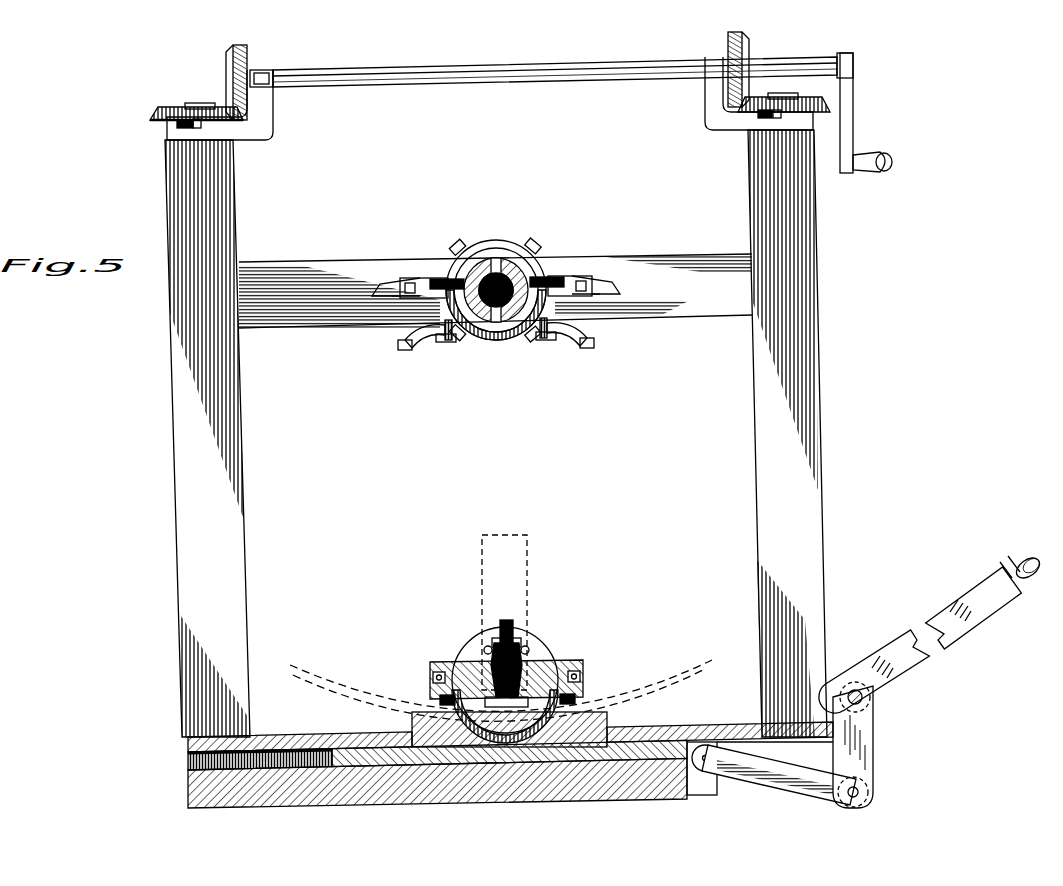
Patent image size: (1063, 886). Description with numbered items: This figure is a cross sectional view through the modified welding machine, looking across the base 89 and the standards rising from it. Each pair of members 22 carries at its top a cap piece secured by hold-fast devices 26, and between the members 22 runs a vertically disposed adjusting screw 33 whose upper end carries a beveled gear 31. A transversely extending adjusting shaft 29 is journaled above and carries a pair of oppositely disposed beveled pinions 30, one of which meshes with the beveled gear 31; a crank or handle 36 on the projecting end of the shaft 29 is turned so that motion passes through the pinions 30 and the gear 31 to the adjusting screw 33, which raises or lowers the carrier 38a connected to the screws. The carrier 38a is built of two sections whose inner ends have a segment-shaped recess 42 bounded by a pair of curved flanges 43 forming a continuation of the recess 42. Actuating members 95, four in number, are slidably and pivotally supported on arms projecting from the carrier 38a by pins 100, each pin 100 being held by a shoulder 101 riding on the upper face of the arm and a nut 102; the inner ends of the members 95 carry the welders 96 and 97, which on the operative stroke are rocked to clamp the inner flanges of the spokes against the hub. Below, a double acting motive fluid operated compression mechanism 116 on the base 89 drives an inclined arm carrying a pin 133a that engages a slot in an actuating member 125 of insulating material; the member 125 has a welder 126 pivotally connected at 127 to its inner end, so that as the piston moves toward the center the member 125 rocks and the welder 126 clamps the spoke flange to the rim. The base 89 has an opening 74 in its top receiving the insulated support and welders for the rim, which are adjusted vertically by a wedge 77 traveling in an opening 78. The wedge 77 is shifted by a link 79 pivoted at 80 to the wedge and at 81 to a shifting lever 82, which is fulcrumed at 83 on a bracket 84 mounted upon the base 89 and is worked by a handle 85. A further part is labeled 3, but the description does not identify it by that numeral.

The frame plate 3 is at (758, 96).
The pair of members 22 is at (175, 138).
The hold-fast devices 26 is at (178, 125).
The adjusting shaft 29 is at (536, 68).
The beveled pinions 30 is at (247, 60).
The beveled gear 31 is at (170, 107).
The adjusting screw 33 is at (200, 104).
The crank or handle 36 is at (853, 118).
The carrier 38a is at (672, 284).
The recess 42 is at (455, 262).
The curved flanges 43 is at (458, 243).
The actuating members 95 is at (430, 277).
The welder 96 is at (462, 274).
The welder 97 is at (522, 270).
The pins 100 is at (447, 330).
The shoulder 101 is at (442, 322).
The nut 102 is at (445, 340).
The double acting motive fluid operated compression mechanism 116 is at (528, 630).
The actuating members 125 is at (505, 620).
The welder 126 is at (506, 679).
The pivotal connection 127 is at (507, 687).
The pin 133a is at (521, 642).
The opening 74 is at (605, 738).
The wedge 77 is at (660, 745).
The opening 78 is at (305, 750).
The link 79 is at (779, 773).
The pivotal connection 80 is at (706, 744).
The pivotal connection 81 is at (862, 790).
The shifting lever 82 is at (870, 742).
The fulcrum 83 is at (866, 698).
The bracket 84 is at (828, 698).
The handle 85 is at (1026, 566).
The base 89 is at (262, 737).